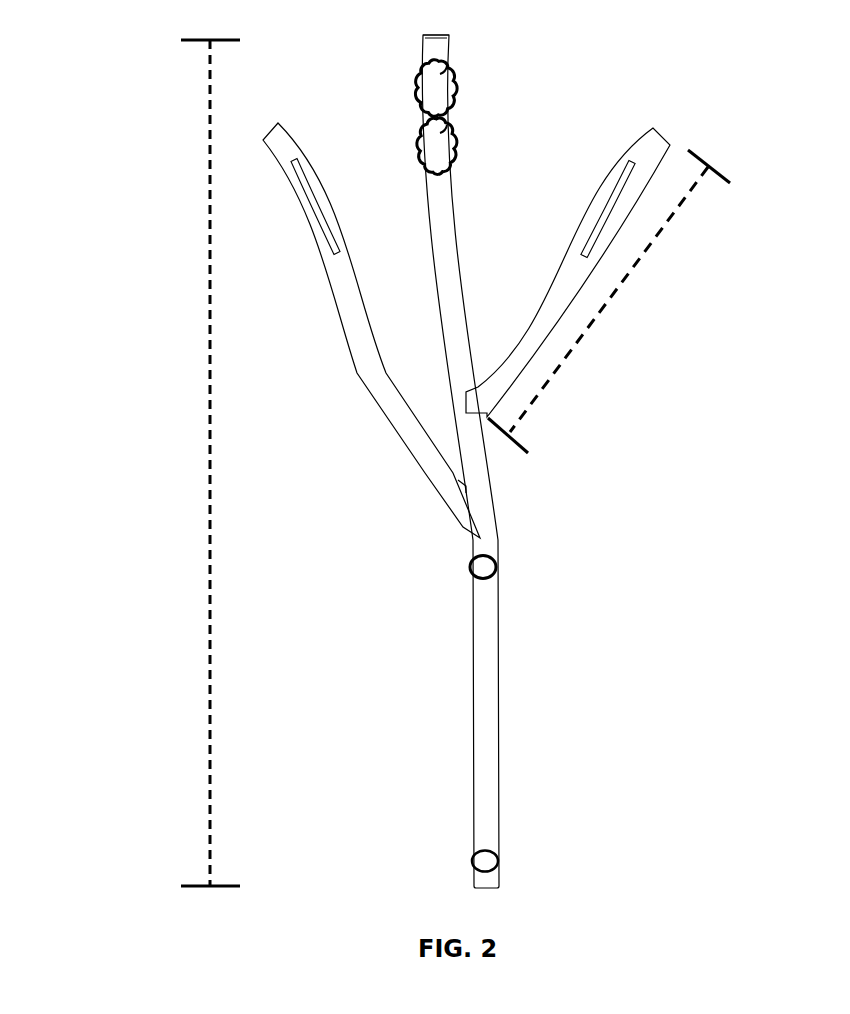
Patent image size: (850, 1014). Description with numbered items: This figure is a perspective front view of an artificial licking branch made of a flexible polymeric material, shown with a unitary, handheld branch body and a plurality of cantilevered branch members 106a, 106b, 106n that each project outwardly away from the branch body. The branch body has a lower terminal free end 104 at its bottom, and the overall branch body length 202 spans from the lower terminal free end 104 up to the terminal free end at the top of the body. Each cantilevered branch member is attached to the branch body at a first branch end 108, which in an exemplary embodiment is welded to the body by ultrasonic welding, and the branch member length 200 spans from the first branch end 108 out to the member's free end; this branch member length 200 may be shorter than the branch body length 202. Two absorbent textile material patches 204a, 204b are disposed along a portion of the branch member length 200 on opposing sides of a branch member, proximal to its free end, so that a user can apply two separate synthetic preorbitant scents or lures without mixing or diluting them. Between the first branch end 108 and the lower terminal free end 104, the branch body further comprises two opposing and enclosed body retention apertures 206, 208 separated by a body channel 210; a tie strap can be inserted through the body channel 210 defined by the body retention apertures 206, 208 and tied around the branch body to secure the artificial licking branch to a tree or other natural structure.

The lower terminal free end 104 is at (458, 878).
The cantilevered branch member 106a is at (373, 450).
The cantilevered branch member 106b is at (418, 222).
The cantilevered branch member 106n is at (676, 129).
The first branch end 108 is at (459, 542).
The branch member length 200 is at (632, 302).
The branch body length 202 is at (172, 553).
The absorbent textile material patch 204a is at (452, 100).
The absorbent textile material patch 204b is at (455, 163).
The body retention aperture 206 is at (506, 559).
The body retention aperture 208 is at (509, 859).
The body channel 210 is at (486, 569).